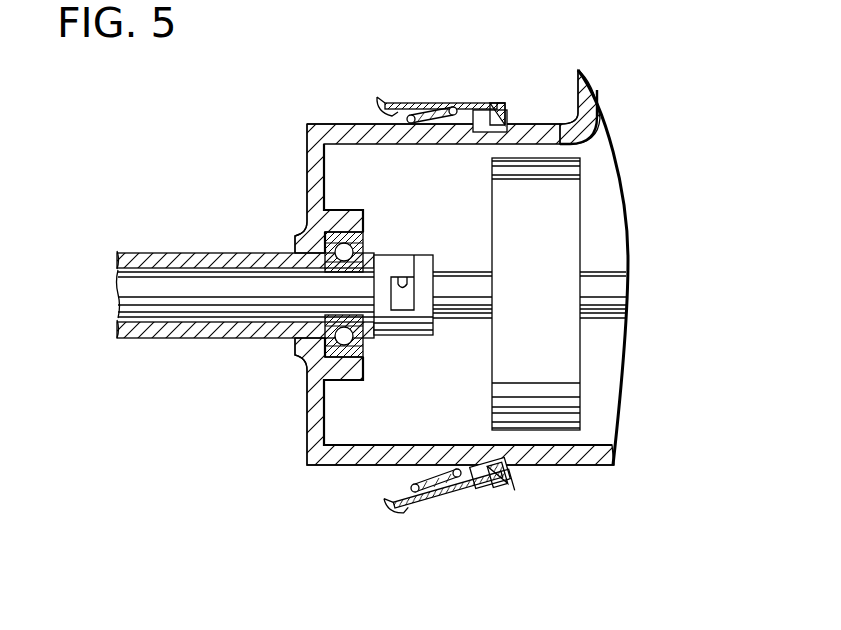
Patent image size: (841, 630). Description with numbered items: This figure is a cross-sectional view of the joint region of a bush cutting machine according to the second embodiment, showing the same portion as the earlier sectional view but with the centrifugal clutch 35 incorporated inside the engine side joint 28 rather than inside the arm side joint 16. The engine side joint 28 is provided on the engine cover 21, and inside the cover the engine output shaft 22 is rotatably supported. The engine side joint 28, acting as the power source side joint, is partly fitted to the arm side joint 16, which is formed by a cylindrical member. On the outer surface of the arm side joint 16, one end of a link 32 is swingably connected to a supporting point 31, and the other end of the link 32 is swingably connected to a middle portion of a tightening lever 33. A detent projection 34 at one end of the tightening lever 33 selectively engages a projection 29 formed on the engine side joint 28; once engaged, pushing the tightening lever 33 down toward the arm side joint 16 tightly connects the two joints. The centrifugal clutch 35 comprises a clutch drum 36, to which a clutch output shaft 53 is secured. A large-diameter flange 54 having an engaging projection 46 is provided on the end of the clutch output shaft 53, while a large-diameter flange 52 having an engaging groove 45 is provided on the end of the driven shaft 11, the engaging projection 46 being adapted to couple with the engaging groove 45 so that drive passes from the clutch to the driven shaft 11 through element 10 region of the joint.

The shaft tube 10 is at (172, 258).
The driven shaft 11 is at (120, 296).
The arm side joint 16 is at (317, 458).
The engine cover 21 is at (587, 108).
The engine output shaft 22 is at (605, 290).
The engine side joint 28 is at (590, 452).
The projection 29 is at (482, 118).
The supporting point 31 is at (455, 107).
The link 32 is at (425, 113).
The tightening lever 33 is at (386, 100).
The detent projection 34 is at (497, 107).
The centrifugal clutch 35 is at (600, 150).
The clutch drum 36 is at (570, 350).
The engaging groove 45 is at (405, 280).
The engaging projection 46 is at (402, 299).
The large-diameter flange 52 is at (387, 318).
The clutch output shaft 53 is at (458, 283).
The large-diameter flange 54 is at (425, 318).